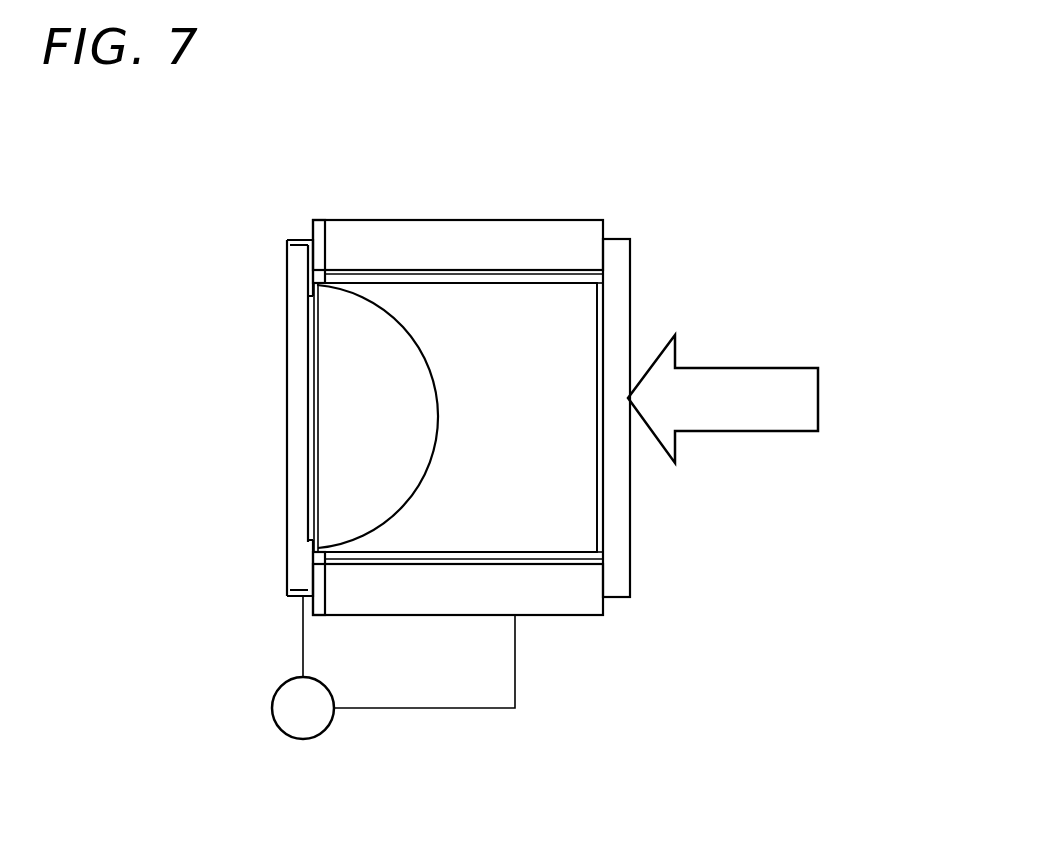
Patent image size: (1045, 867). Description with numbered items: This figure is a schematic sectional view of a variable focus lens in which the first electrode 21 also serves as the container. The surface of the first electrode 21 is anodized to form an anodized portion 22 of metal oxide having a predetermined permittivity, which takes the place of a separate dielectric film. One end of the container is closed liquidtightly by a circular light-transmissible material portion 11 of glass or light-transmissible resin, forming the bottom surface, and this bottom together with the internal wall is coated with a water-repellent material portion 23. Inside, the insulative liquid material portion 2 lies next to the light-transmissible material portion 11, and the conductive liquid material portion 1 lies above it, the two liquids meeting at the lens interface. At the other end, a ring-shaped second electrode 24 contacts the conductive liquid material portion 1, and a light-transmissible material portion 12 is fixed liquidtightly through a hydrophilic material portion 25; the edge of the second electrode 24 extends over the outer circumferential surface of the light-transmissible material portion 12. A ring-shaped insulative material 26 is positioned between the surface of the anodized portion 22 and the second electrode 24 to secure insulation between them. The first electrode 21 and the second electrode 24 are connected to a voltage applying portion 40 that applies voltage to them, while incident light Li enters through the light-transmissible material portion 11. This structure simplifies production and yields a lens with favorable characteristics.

The conductive liquid material portion 1 is at (343, 323).
The insulative liquid material portion 2 is at (577, 495).
The light-transmissible material portion 11 is at (613, 527).
The light-transmissible material portion 12 is at (292, 507).
The first electrode 21 is at (550, 236).
The anodized portion 22 is at (603, 273).
The water-repellent material portion 23 is at (603, 319).
The second electrode 24 is at (302, 238).
The hydrophilic material portion 25 is at (313, 385).
The ring-shaped insulative material 26 is at (322, 222).
The voltage applying portion 40 is at (298, 740).
The incident light Li is at (818, 398).